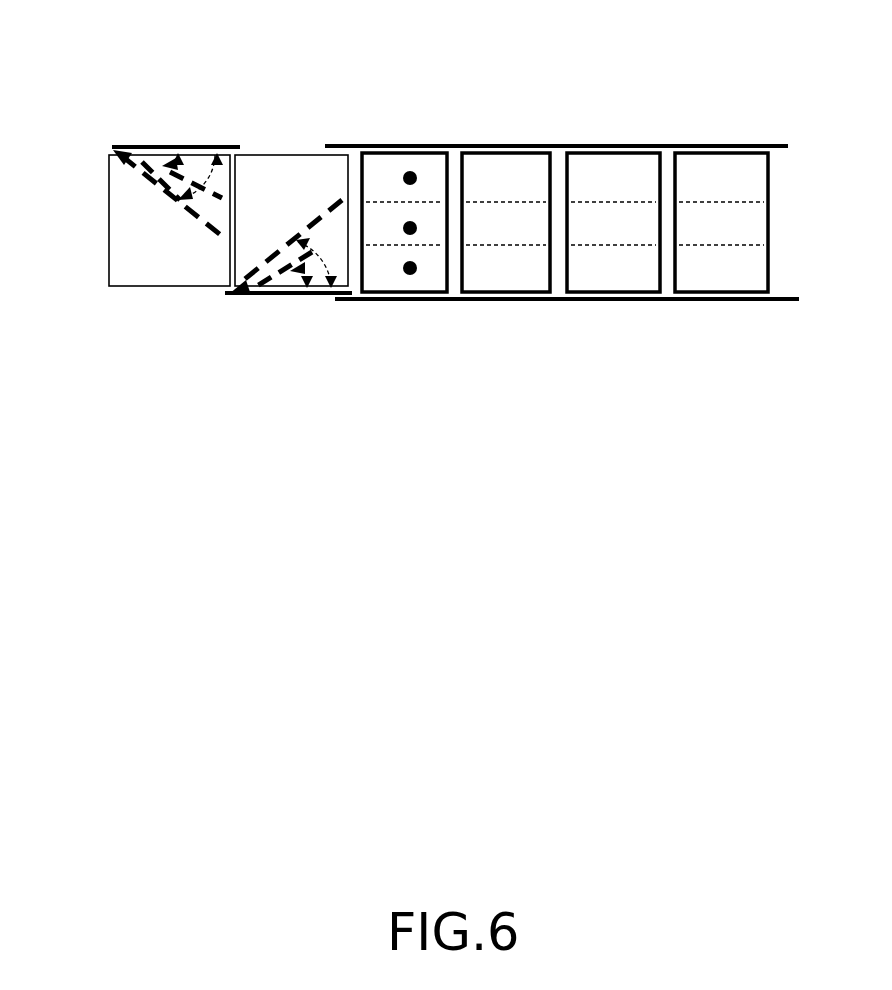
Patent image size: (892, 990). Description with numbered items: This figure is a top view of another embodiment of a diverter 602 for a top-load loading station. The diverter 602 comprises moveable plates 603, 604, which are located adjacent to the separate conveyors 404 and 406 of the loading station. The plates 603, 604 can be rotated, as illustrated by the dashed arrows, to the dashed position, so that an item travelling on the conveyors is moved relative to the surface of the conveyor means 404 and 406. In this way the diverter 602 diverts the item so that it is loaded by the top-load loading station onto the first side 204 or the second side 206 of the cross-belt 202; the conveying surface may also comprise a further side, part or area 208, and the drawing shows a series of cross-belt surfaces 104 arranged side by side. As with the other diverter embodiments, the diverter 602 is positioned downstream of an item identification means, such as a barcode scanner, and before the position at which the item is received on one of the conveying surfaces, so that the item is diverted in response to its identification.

The display panel 104 is at (723, 143).
The cross-belt 202 is at (388, 148).
The first side 204 is at (410, 178).
The second side 206 is at (410, 228).
The further side 208 is at (410, 268).
The conveyor 404 is at (115, 287).
The conveyor 406 is at (265, 150).
The diverter 602 is at (117, 119).
The moveable plate 603 is at (192, 147).
The moveable plate 604 is at (260, 307).